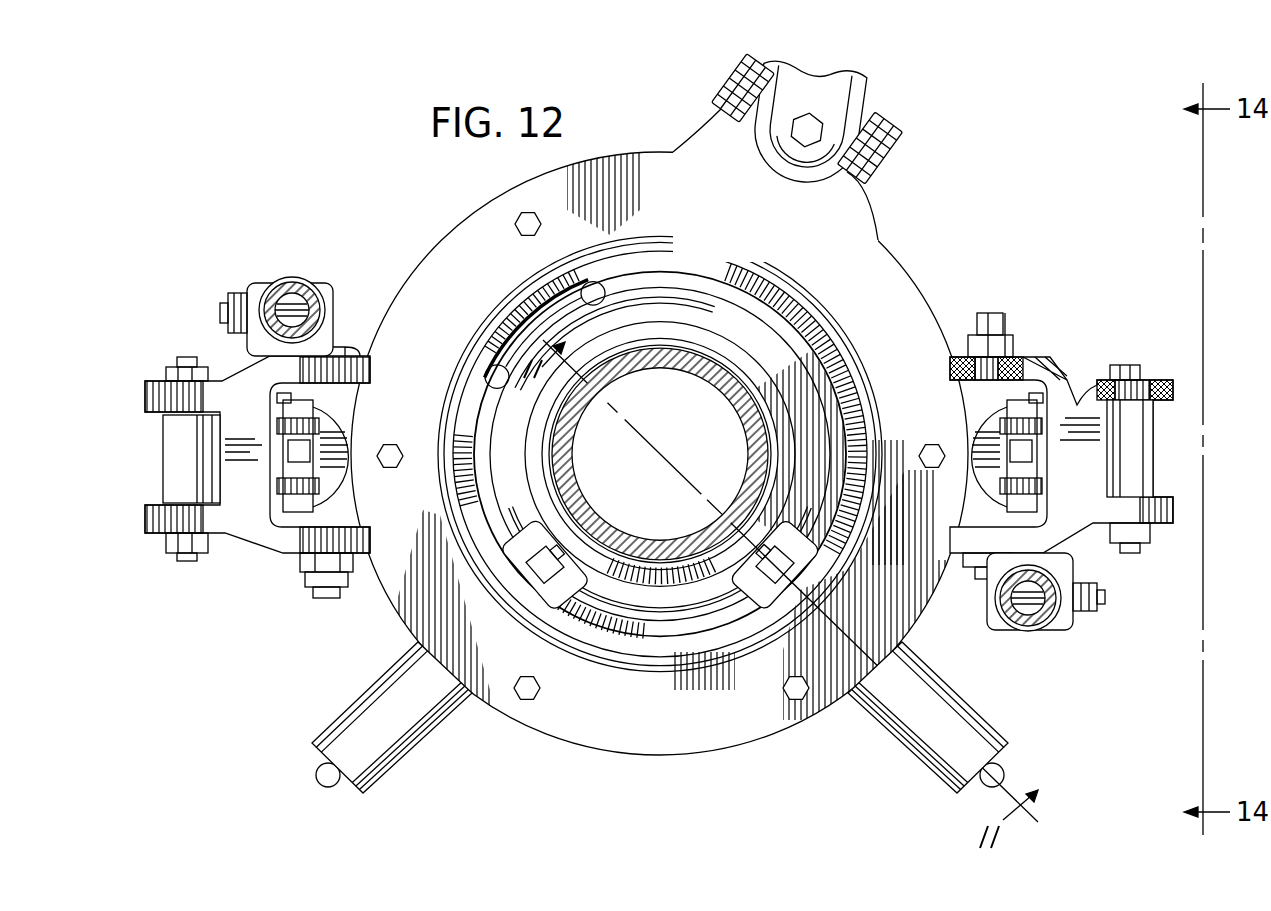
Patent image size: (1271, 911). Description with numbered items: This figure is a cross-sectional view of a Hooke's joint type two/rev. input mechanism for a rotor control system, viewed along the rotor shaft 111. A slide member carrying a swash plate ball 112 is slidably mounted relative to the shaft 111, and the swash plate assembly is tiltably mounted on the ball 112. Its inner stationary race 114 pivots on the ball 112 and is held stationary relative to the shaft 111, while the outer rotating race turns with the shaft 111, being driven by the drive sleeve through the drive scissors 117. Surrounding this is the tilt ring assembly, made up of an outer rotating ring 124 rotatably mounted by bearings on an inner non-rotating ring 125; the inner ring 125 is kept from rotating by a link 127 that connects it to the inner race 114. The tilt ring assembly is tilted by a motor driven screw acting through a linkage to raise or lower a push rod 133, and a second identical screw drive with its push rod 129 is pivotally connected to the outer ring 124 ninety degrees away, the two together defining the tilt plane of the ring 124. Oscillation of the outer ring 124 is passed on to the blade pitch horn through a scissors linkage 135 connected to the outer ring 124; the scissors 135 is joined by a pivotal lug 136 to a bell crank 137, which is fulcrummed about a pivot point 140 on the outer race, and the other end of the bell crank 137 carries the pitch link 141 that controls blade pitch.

The shaft 111 is at (660, 454).
The swash plate ball 112 is at (586, 560).
The inner stationary race 114 is at (680, 438).
The drive scissors 117 is at (855, 87).
The outer rotating ring 124 is at (880, 304).
The inner non-rotating ring 125 is at (637, 453).
The link 127 is at (526, 334).
The push rod 129 is at (412, 763).
The push rod 133 is at (665, 540).
The scissors linkage 135 is at (282, 560).
The pivotal lug 136 is at (327, 413).
The bell crank 137 is at (253, 348).
The pivot point 140 is at (337, 462).
The pitch link 141 is at (297, 282).